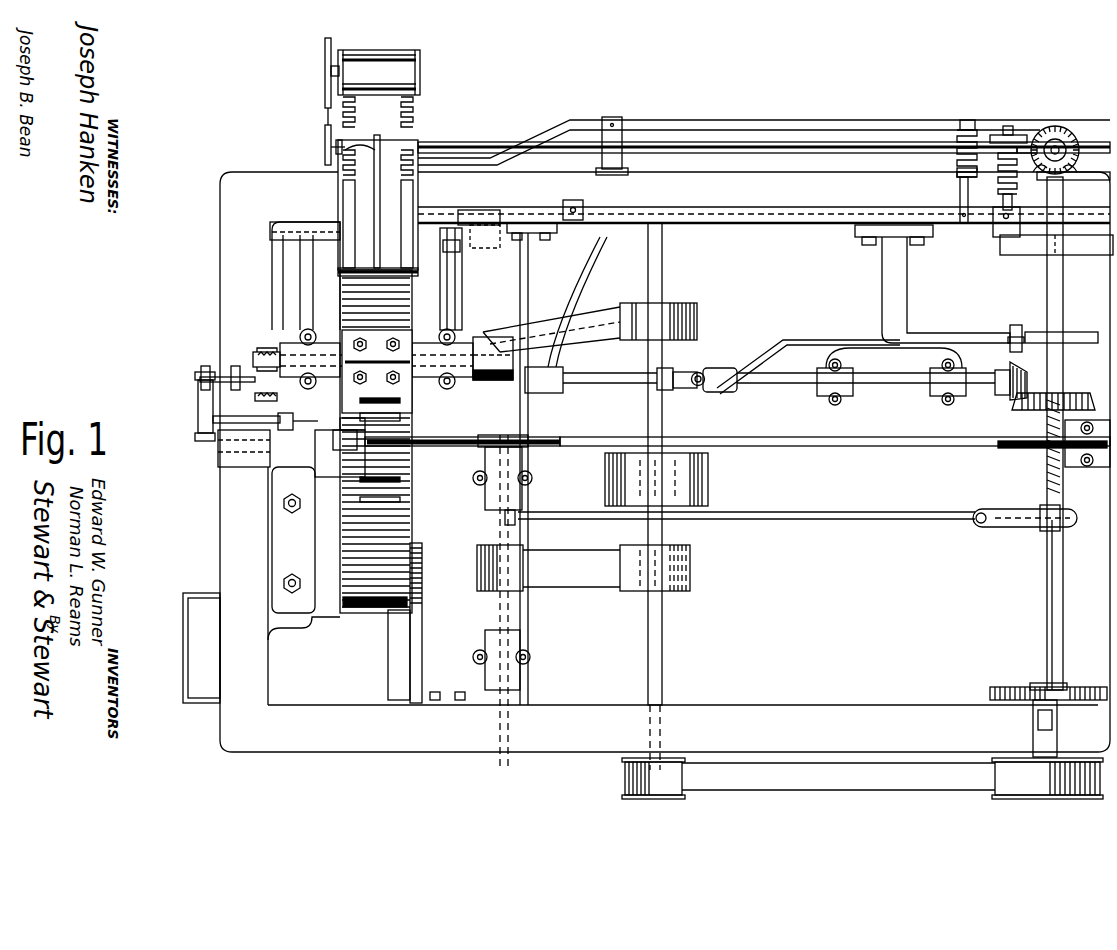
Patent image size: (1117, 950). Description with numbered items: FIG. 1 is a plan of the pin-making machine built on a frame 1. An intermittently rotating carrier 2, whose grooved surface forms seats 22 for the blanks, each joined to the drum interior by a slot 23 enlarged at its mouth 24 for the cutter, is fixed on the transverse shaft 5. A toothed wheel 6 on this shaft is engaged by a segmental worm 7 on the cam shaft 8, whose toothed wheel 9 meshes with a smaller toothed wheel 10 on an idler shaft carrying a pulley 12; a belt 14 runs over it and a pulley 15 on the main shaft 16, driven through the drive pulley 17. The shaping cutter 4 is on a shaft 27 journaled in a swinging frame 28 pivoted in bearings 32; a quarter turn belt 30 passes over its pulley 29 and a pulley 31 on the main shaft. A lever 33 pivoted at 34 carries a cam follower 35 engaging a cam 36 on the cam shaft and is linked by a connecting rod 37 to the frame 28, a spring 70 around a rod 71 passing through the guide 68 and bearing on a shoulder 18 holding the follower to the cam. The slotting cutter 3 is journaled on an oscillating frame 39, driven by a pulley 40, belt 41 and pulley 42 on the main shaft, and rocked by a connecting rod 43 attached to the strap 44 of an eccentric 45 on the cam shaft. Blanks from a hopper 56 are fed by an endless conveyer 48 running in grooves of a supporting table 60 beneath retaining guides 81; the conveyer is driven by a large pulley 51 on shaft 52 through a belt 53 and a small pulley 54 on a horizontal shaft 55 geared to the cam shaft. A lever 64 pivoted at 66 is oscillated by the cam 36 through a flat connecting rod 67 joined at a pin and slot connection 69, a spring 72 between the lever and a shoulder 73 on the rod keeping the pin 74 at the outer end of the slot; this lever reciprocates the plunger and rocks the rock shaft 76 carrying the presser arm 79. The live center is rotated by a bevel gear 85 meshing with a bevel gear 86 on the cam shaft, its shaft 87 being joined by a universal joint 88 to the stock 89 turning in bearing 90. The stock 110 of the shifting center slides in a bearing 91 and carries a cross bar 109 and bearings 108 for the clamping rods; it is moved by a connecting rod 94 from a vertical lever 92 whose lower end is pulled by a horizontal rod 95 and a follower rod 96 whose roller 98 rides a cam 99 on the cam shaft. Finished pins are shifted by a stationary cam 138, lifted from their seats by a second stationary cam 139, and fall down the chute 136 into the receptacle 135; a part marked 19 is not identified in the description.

The frame 1 is at (242, 489).
The carrier 2 is at (405, 468).
The slotting cutter 3 is at (572, 440).
The shaping cutter 4 is at (350, 338).
The shaft 5 is at (892, 447).
The toothed wheel 6 is at (1047, 492).
The segmental worm 7 is at (1015, 448).
The cam shaft 8 is at (1047, 632).
The toothed wheel 9 is at (990, 693).
The toothed wheel 10 is at (1062, 690).
The pulley 12 is at (1005, 797).
The belt 14 is at (838, 776).
The pulley 15 is at (628, 795).
The main shaft 16 is at (665, 652).
The drive pulley 17 is at (710, 493).
The shoulder 18 is at (1003, 192).
The gear 19 is at (405, 522).
The seats 22 is at (402, 500).
The slot 23 is at (400, 402).
The mouths 24 is at (402, 419).
The shaft 27 is at (300, 340).
The swinging frame 28 is at (305, 270).
The pulley 29 is at (482, 343).
The quarter turn belt 30 is at (590, 322).
The pulley 31 is at (697, 312).
The bearings 32 is at (335, 240).
The lever 33 is at (735, 215).
The pivot 34 is at (585, 208).
The cam follower 35 is at (995, 232).
The cam 36 is at (1020, 252).
The connecting rod 37 is at (460, 258).
The oscillating frame 39 is at (520, 678).
The pulley 40 is at (480, 592).
The belt 41 is at (600, 590).
The pulley 42 is at (692, 590).
The connecting rod 43 is at (808, 521).
The strap 44 is at (983, 527).
The eccentric 45 is at (1020, 527).
The endless conveyer 48 is at (414, 112).
The large pulley 51 is at (324, 68).
The shaft 52 is at (330, 76).
The belt 53 is at (324, 112).
The small pulley 54 is at (324, 150).
The horizontal shaft 55 is at (715, 150).
The hopper 56 is at (400, 62).
The supporting table 60 is at (418, 137).
The lever 64 is at (548, 128).
The pivot 66 is at (613, 115).
The flat connecting rod 67 is at (965, 128).
The guide 68 is at (1015, 135).
The pin and slot connection 69 is at (1008, 145).
The spring 70 is at (1040, 132).
The rod 71 is at (1010, 126).
The spring 72 is at (975, 150).
The shoulder 73 is at (957, 170).
The pin 74 is at (968, 120).
The rock shaft 76 is at (340, 137).
The presser arm 79 is at (372, 160).
The retaining guides 81 is at (350, 225).
The bevel gear 85 is at (1008, 400).
The bevel gear 86 is at (1038, 410).
The shaft 87 is at (797, 385).
The universal joint 88 is at (695, 393).
The stock 89 is at (620, 385).
The bearing 90 is at (560, 372).
The bearing 91 is at (205, 395).
The lever 92 is at (215, 385).
The connecting rod 94 is at (205, 375).
The horizontal rod 95 is at (765, 350).
The follower rod 96 is at (1016, 326).
The roller 98 is at (1000, 338).
The cam 99 is at (1080, 332).
The bearings 108 is at (262, 355).
The cross bar 109 is at (270, 358).
The stock 110 is at (260, 380).
The receptacle 135 is at (205, 662).
The chute 136 is at (398, 680).
The stationary cam 138 is at (320, 558).
The stationary cam 139 is at (423, 572).